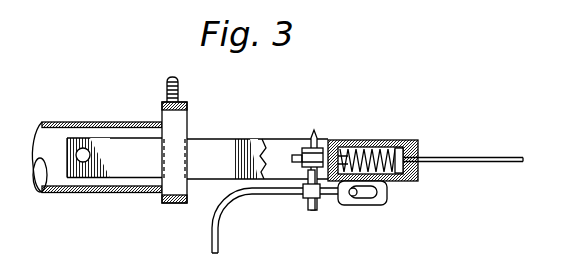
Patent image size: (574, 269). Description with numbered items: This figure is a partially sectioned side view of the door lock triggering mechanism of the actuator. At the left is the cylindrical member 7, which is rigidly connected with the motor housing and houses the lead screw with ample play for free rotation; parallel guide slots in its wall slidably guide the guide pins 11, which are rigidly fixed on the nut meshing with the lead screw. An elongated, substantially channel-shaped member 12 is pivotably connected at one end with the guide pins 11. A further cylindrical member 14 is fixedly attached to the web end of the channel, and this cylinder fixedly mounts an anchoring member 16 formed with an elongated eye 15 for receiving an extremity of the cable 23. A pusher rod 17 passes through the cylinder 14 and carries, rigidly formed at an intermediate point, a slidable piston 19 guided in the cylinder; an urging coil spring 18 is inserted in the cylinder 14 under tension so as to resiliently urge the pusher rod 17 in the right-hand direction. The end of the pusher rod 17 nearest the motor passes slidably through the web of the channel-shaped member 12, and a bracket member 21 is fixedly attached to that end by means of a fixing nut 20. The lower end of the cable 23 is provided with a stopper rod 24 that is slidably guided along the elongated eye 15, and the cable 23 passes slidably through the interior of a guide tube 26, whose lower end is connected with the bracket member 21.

The cylindrical member 7 is at (130, 130).
The guide pins 11 is at (84, 148).
The channel-shaped member 12 is at (233, 140).
The further cylindrical member 14 is at (402, 181).
The elongated eye 15 is at (375, 199).
The anchoring member 16 is at (363, 204).
The pusher rod 17 is at (483, 162).
The urging coil spring 18 is at (373, 151).
The slidable piston 19 is at (398, 148).
The fixing nut 20 is at (313, 132).
The bracket member 21 is at (312, 211).
The cable 23 is at (218, 243).
The stopper rod 24 is at (353, 198).
The guide tube 26 is at (250, 195).